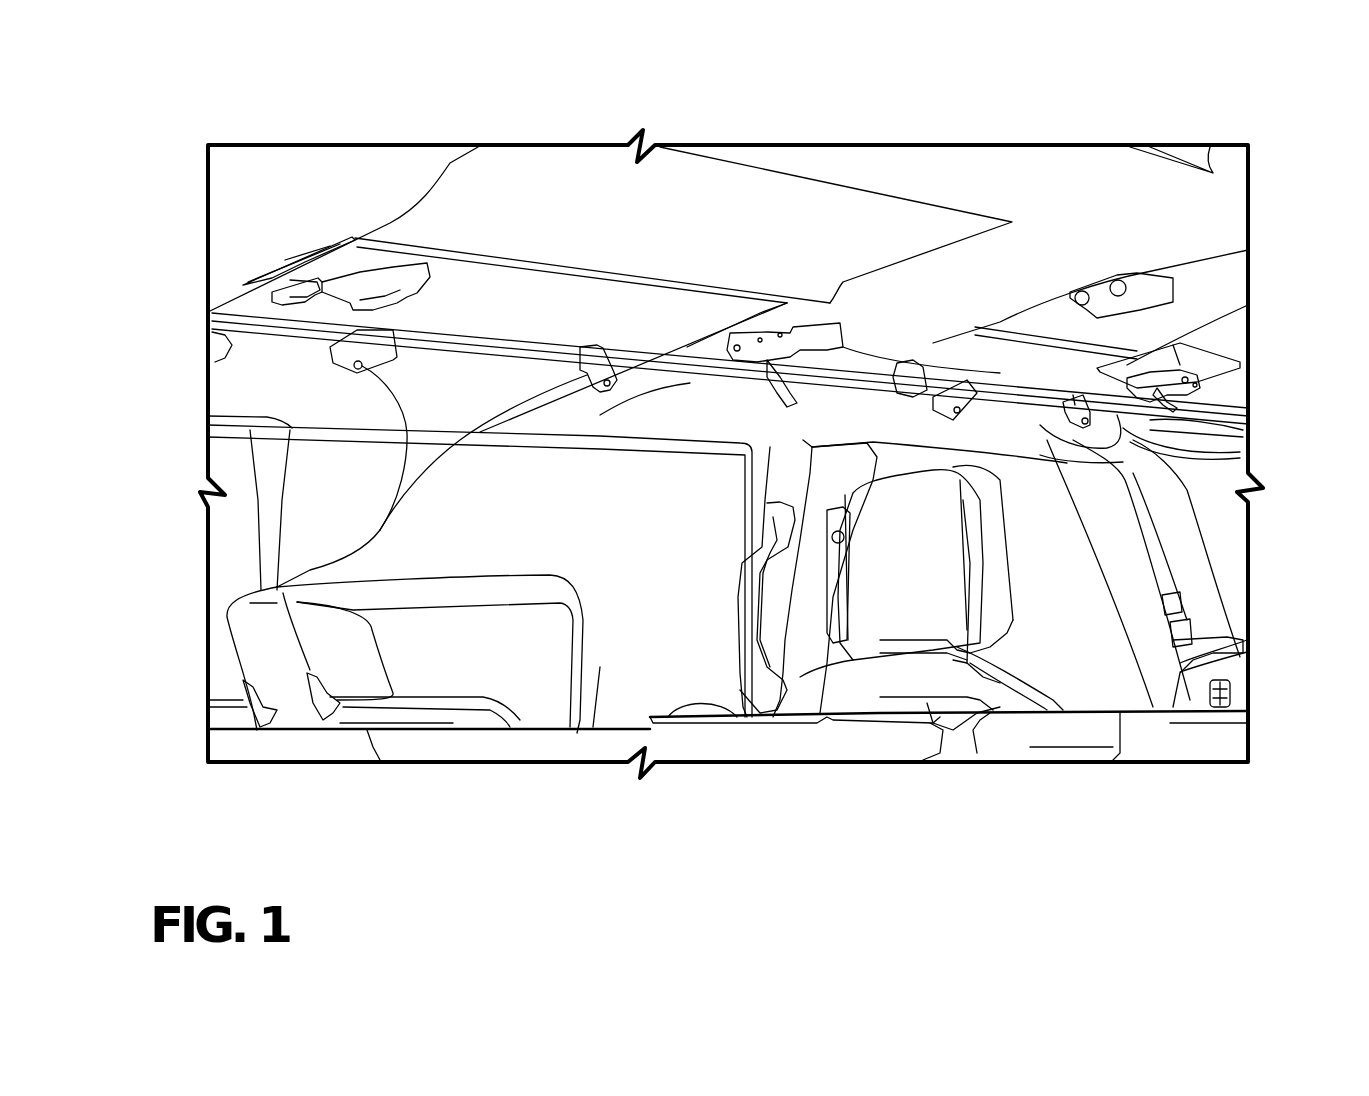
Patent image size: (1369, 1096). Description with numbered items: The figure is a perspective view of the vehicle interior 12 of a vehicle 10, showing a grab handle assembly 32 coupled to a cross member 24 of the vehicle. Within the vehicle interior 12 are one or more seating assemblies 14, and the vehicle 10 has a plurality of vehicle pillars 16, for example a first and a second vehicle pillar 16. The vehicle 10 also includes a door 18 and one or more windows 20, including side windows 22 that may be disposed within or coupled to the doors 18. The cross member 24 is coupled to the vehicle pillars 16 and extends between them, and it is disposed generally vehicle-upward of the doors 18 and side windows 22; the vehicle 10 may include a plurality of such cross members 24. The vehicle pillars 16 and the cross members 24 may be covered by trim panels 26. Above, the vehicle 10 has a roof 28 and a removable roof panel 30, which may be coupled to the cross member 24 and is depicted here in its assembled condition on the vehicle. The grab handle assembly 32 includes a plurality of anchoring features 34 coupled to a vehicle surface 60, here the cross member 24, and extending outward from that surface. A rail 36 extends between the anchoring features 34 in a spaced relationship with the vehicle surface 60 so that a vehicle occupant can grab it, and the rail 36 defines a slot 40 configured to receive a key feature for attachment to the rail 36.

The vehicle 10 is at (968, 135).
The vehicle interior 12 is at (1056, 222).
The seating assembly 14 is at (402, 674).
The vehicle pillar 16 is at (833, 480).
The door 18 is at (645, 462).
The window 20 is at (607, 662).
The side window 22 is at (670, 650).
The cross member 24 is at (318, 365).
The trim panel 26 is at (252, 372).
The roof 28 is at (603, 232).
The removable roof panel 30 is at (558, 264).
The grab handle assembly 32 is at (463, 328).
The anchoring feature 34 is at (937, 372).
The rail 36 is at (433, 342).
The slot 40 is at (512, 352).
The vehicle surface 60 is at (683, 413).